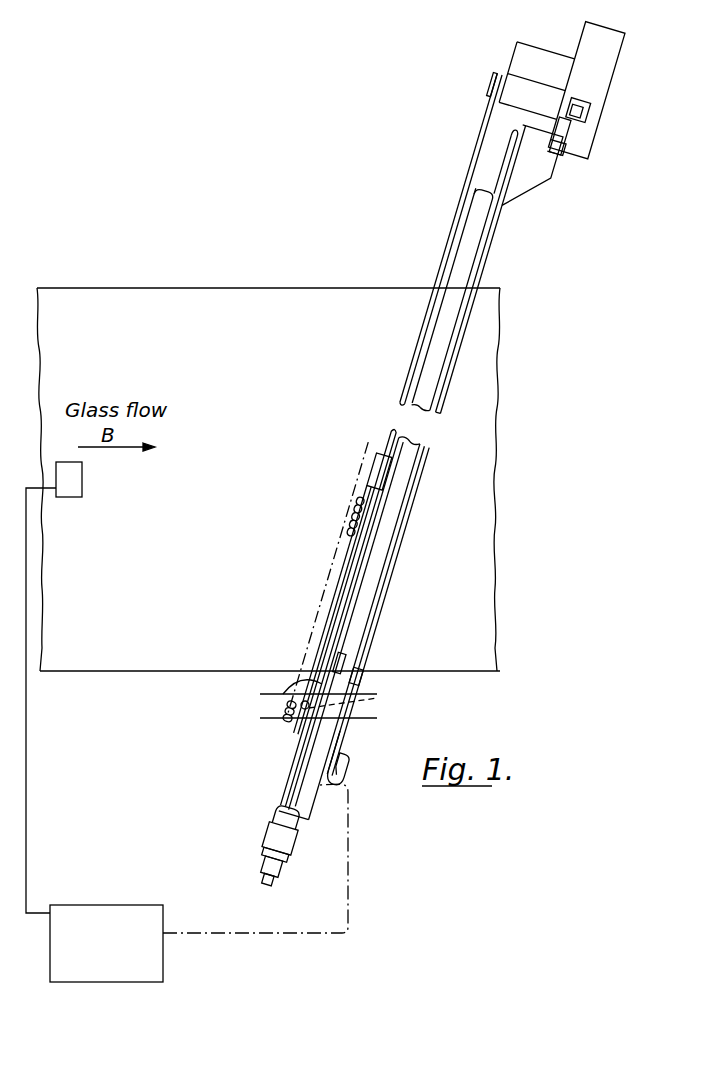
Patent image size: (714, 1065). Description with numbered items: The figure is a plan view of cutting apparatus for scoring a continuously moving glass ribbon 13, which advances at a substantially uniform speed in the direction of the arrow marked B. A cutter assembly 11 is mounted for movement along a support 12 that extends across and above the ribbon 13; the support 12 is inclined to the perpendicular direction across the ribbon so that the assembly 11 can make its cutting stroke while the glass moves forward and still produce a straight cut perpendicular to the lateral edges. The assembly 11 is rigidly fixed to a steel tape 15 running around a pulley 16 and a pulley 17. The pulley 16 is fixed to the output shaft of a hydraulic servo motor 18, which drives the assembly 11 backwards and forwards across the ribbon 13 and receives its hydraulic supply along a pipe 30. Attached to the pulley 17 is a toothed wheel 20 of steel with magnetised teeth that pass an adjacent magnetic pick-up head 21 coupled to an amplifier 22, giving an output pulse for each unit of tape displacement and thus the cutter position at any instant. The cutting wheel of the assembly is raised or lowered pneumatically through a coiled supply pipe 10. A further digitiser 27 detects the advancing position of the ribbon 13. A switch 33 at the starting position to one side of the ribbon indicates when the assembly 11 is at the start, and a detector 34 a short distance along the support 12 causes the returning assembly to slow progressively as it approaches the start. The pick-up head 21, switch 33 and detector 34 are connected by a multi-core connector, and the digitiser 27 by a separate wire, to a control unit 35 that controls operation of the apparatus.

The coiled supply pipe 10 is at (283, 727).
The cutter assembly 11 is at (382, 485).
The support 12 is at (381, 548).
The glass ribbon 13 is at (338, 292).
The steel tape 15 is at (468, 180).
The pulley 16 is at (493, 83).
The pulley 17 is at (273, 797).
The hydraulic servo motor 18 is at (582, 103).
The toothed wheel 20 is at (300, 810).
The magnetic pick-up head 21 is at (295, 832).
The amplifier 22 is at (268, 842).
The digitiser 27 is at (71, 488).
The pipe 30 is at (380, 594).
The switch 33 is at (359, 704).
The detector 34 is at (348, 656).
The control unit 35 is at (199, 883).